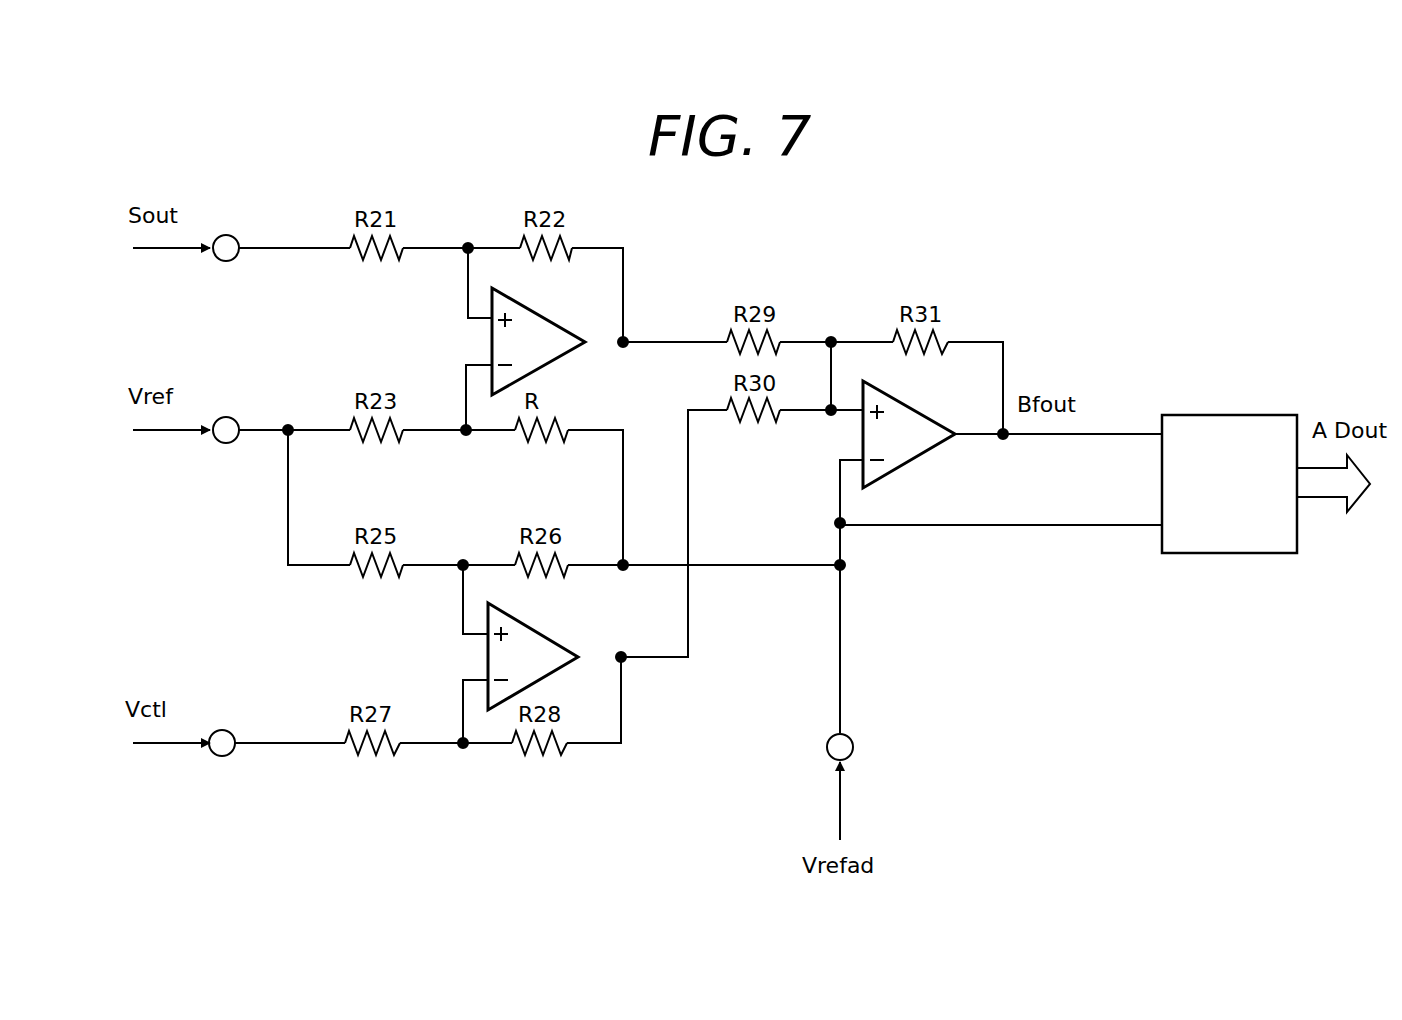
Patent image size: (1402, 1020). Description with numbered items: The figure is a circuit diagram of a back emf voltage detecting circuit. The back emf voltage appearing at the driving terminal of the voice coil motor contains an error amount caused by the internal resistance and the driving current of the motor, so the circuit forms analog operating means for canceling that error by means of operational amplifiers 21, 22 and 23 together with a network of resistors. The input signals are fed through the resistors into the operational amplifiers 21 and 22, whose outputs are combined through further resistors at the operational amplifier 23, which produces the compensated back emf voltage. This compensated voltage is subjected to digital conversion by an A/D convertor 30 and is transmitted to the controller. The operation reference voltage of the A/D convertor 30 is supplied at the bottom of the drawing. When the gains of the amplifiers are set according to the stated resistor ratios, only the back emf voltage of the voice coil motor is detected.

The operational amplifier 21 is at (558, 362).
The operational amplifier 22 is at (548, 636).
The operational amplifier 23 is at (932, 450).
The A/D convertor 30 is at (1236, 414).